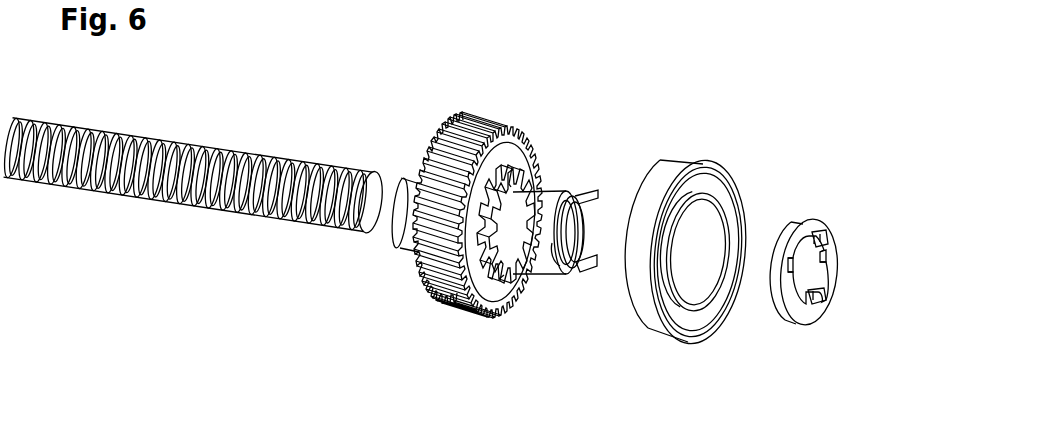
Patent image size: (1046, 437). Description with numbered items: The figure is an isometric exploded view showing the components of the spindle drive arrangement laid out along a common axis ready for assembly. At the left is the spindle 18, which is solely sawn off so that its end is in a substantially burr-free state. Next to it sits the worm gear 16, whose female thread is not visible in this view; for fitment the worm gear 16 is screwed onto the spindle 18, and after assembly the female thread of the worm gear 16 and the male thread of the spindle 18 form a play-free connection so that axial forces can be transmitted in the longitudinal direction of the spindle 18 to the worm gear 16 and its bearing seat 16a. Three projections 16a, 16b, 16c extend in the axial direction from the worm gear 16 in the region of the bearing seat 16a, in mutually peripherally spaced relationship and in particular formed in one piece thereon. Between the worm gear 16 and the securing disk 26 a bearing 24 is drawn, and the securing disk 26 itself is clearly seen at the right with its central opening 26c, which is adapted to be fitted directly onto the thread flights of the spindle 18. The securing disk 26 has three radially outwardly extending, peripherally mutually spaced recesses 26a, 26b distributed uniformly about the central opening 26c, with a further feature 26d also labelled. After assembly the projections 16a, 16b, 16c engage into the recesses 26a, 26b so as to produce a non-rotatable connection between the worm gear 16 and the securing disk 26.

The spindle 18 is at (300, 168).
The worm gear 16 is at (495, 128).
The projection 16a is at (589, 194).
The projection 16b is at (552, 243).
The projection 16c is at (590, 270).
The bearing 24 is at (667, 165).
The securing disk 26 is at (802, 217).
The recess 26a is at (814, 236).
The recess 26b is at (817, 297).
The central opening 26c is at (826, 226).
The recess of securing ring 26d is at (817, 262).